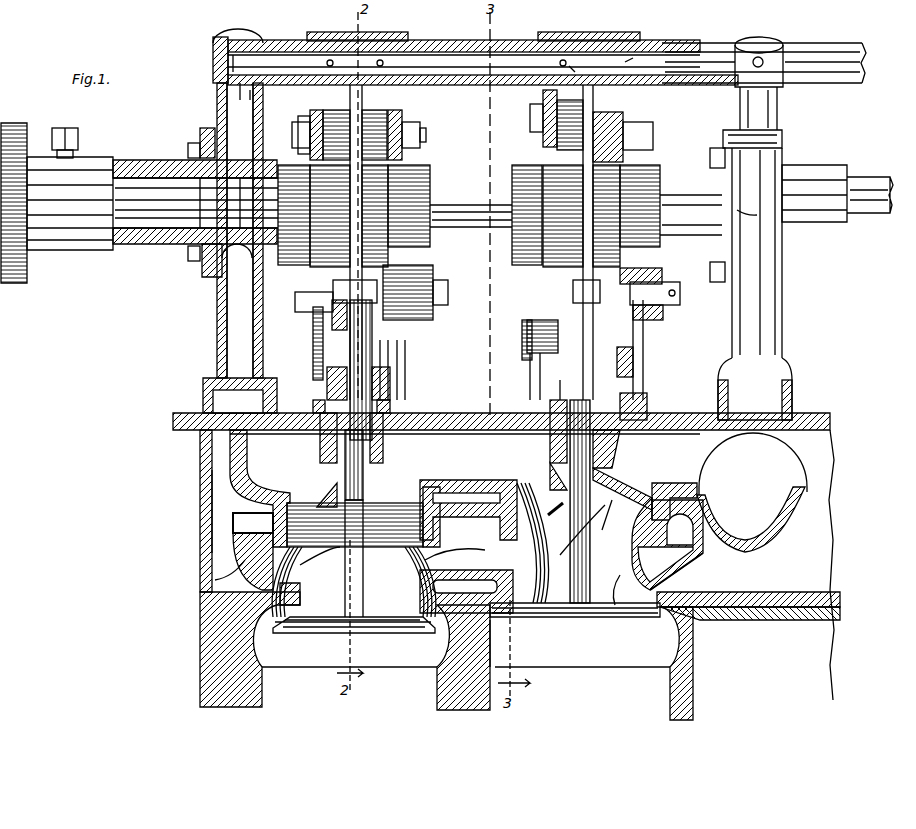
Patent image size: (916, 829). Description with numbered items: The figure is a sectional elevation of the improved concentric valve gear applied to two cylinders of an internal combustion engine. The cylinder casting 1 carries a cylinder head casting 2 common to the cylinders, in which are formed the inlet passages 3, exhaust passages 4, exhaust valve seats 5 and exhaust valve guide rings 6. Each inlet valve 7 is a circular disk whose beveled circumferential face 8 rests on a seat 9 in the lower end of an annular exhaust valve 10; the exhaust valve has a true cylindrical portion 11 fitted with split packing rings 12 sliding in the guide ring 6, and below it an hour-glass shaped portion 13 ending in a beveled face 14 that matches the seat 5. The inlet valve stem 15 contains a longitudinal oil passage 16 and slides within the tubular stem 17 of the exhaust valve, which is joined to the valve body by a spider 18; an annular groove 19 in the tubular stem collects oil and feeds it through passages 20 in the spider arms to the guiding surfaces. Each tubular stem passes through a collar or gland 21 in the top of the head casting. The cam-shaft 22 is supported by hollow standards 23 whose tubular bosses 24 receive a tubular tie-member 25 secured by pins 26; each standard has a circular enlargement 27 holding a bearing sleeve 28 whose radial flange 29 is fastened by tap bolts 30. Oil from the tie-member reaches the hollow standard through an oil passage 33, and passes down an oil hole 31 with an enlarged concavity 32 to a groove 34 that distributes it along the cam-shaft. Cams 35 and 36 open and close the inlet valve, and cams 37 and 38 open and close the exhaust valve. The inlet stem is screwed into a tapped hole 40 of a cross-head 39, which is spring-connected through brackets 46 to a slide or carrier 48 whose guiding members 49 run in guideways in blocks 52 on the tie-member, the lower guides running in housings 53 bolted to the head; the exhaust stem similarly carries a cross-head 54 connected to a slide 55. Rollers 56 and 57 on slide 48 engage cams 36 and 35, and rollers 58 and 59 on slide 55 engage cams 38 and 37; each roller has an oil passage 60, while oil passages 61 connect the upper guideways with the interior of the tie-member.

The cylinder casting 1 is at (477, 662).
The cylinder head casting 2 is at (200, 565).
The inlet passages 3 is at (518, 488).
The exhaust passages 4 is at (481, 541).
The exhaust valve seats 5 is at (305, 600).
The exhaust valve guide ring 6 is at (273, 527).
The inlet valve 7 is at (360, 635).
The beveled circumferential face 8 is at (575, 629).
The seat 9 is at (617, 600).
The exhaust valve 10 is at (462, 539).
The cylindrical portion 11 is at (400, 510).
The split packing rings 12 is at (330, 540).
The hour-glass shaped portion 13 is at (700, 583).
The beveled face 14 is at (310, 625).
The inlet valve stem 15 is at (375, 360).
The oil passage 16 is at (633, 465).
The tubular stem 17 is at (355, 460).
The spider 18 is at (380, 500).
The annular groove 19 is at (554, 501).
The passages 20 is at (605, 500).
The collar or gland 21 is at (320, 448).
The cam-shaft 22 is at (140, 200).
The hollow standards 23 is at (217, 300).
The tubular head or boss 24 is at (213, 42).
The tubular tie-member 25 is at (471, 242).
The pins 26 is at (762, 60).
The circular enlargement 27 is at (202, 262).
The sleeve 28 is at (130, 245).
The radial flange 29 is at (203, 130).
The tap bolts 30 is at (188, 150).
The oil hole 31 is at (237, 203).
The concavity 32 is at (205, 203).
The oil passage 33 is at (240, 97).
The groove or channel 34 is at (145, 160).
The cam 35 is at (420, 178).
The cam 36 is at (375, 190).
The cam 37 is at (410, 215).
The cam 38 is at (446, 216).
The cross-head 39 is at (325, 330).
The tapped hole 40 is at (305, 312).
The stud or bracket 46 is at (466, 291).
The slide or carrier 48 is at (425, 130).
The guiding members 49 is at (336, 118).
The blocks 52 is at (390, 25).
The housings 53 is at (660, 340).
The cross-head 54 is at (390, 392).
The slide or carrier 55 is at (540, 104).
The roller 56 is at (400, 118).
The roller 57 is at (430, 290).
The roller 58 is at (330, 125).
The roller 59 is at (240, 230).
The oil passage 60 is at (665, 272).
The oil passages 61 is at (330, 60).